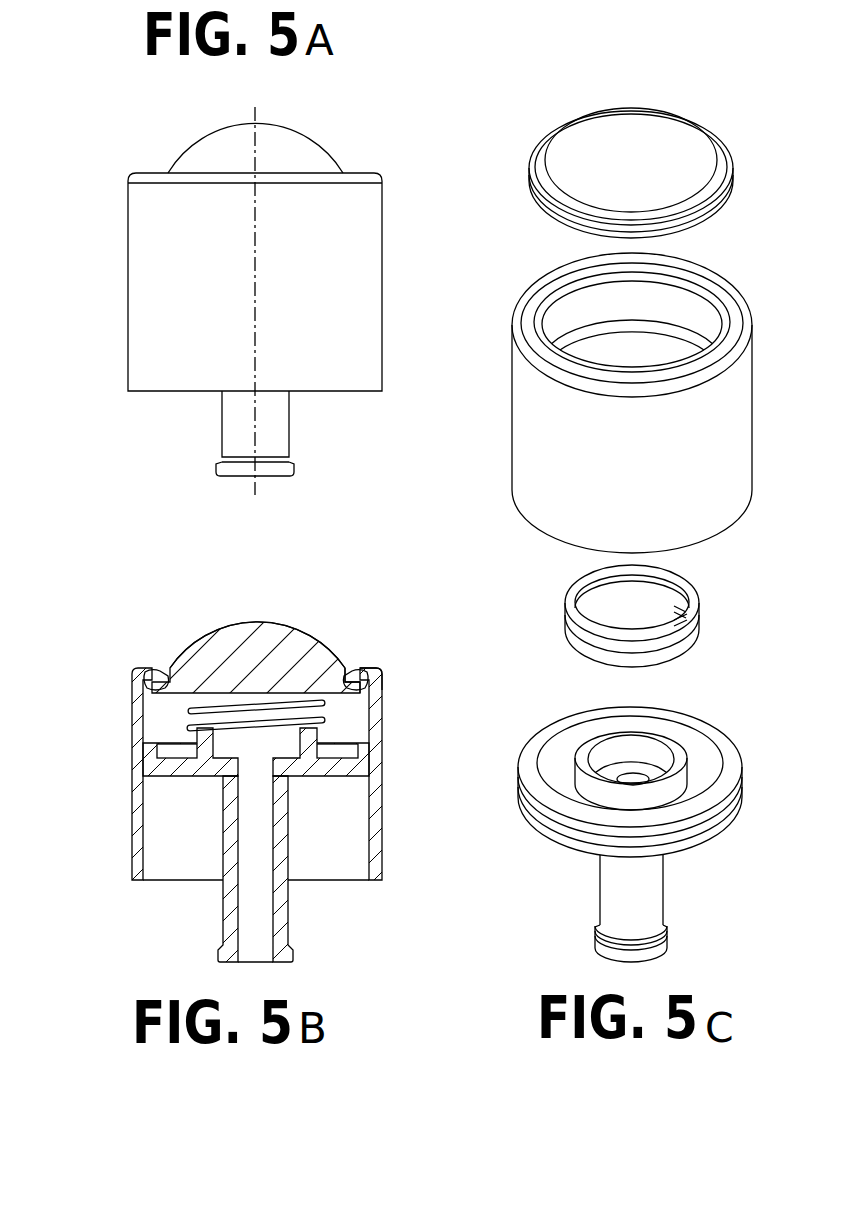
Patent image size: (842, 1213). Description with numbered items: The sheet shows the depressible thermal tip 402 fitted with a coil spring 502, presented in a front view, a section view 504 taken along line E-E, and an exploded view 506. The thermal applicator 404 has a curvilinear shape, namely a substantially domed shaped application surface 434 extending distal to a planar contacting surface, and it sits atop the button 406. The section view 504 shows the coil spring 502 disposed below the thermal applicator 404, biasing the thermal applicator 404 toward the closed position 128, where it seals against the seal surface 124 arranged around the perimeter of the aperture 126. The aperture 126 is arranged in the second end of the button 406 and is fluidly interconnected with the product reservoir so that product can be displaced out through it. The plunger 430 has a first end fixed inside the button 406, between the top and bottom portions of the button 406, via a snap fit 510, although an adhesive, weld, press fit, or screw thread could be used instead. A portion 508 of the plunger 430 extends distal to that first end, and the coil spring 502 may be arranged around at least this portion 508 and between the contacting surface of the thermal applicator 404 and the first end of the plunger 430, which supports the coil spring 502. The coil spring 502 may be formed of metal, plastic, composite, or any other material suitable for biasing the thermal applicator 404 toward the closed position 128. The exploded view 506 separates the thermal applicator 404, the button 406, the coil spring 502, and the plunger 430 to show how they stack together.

In FIG. 5A, the depressible thermal tip 402 is at (121, 95).
In FIG. 5A, the thermal applicator 404 is at (193, 145).
In FIG. 5B, the thermal applicator 404 is at (205, 647).
In FIG. 5C, the thermal applicator 404 is at (586, 173).
In FIG. 5A, the button 406 is at (212, 282).
In FIG. 5C, the button 406 is at (572, 395).
In FIG. 5A, the plunger 430 is at (168, 433).
In FIG. 5B, the plunger 430 is at (168, 869).
In FIG. 5B, the section view 504 is at (257, 760).
In FIG. 5B, the domed shaped application surface 434 is at (268, 634).
In FIG. 5B, the aperture 126 is at (408, 652).
In FIG. 5C, the aperture 126 is at (566, 305).
In FIG. 5B, the seal surface 124 is at (416, 661).
In FIG. 5B, the closed position 128 is at (205, 671).
In FIG. 5B, the coil spring 502 is at (182, 709).
In FIG. 5C, the coil spring 502 is at (587, 616).
In FIG. 5B, the snap fit 510 is at (206, 752).
In FIG. 5C, the lens cap 506 is at (574, 160).
In FIG. 5C, the portion of the plunger 508 is at (570, 818).